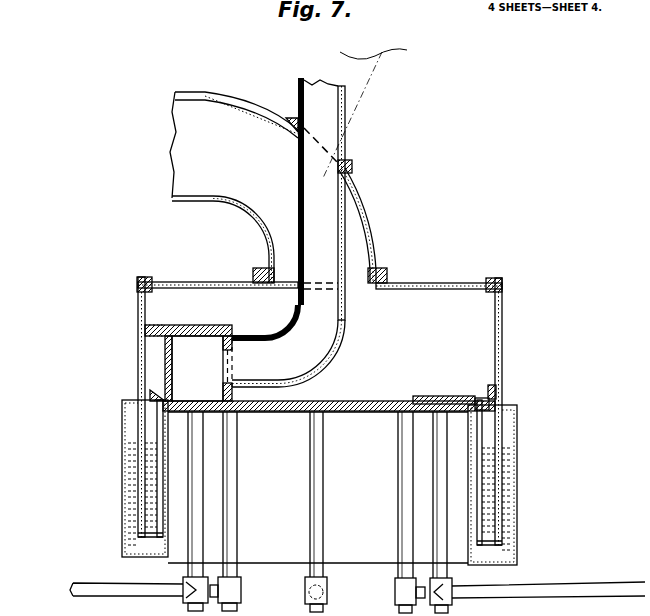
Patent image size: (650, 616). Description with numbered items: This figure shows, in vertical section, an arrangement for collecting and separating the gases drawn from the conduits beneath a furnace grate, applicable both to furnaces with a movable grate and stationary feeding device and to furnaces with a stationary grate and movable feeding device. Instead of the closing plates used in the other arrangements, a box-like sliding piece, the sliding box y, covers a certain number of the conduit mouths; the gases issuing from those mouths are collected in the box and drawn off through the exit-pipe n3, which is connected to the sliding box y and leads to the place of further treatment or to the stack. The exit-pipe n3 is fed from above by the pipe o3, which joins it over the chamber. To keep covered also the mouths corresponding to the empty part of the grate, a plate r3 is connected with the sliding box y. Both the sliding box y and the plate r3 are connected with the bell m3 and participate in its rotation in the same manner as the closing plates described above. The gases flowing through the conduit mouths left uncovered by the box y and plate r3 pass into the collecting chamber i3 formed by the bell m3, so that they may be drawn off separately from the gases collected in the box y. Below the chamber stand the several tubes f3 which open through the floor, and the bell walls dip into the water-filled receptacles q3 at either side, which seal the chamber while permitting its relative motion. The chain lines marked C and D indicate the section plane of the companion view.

The inlet pipe o3 is at (218, 193).
The exit-pipe n3 is at (335, 322).
The collecting chamber i3 is at (319, 420).
The bell m3 is at (140, 332).
The sliding box y is at (190, 327).
The plate r3 is at (454, 391).
The liquid seal vessel q3 is at (520, 491).
The drain tube f3 is at (454, 503).
The section line C is at (115, 350).
The section line D is at (513, 358).